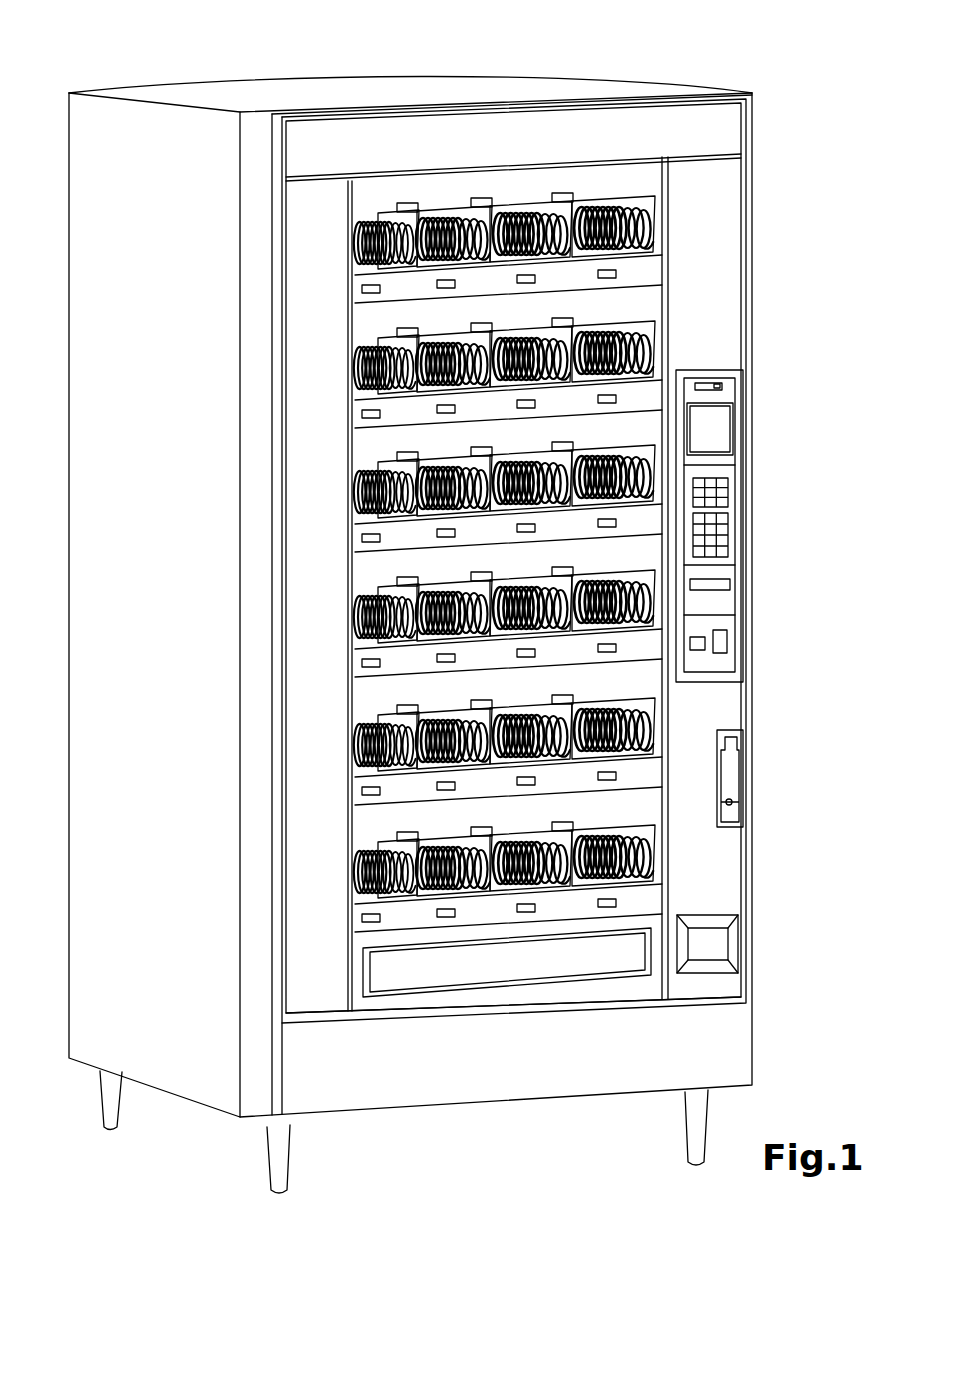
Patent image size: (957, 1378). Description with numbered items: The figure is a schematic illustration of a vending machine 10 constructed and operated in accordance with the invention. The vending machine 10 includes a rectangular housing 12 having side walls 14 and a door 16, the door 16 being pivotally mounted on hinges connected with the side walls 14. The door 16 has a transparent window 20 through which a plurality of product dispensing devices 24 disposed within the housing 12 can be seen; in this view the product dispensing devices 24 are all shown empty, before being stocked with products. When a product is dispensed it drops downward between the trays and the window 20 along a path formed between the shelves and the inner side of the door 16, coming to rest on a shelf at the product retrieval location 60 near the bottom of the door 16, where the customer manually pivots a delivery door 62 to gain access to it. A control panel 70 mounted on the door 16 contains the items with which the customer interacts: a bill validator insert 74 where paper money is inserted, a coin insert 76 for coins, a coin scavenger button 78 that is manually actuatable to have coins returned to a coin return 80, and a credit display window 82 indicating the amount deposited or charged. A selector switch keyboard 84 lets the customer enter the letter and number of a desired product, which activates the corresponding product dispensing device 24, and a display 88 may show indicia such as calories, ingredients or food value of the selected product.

The vending machine 10 is at (748, 72).
The housing 12 is at (210, 102).
The side walls 14 is at (118, 449).
The door 16 is at (265, 627).
The transparent window 20 is at (462, 187).
The product dispensing devices 24 is at (377, 227).
The product retrieval location 60 is at (485, 980).
The delivery door 62 is at (385, 970).
The control panel 70 is at (740, 475).
The bill validator insert 74 is at (715, 582).
The coin insert 76 is at (727, 642).
The coin scavenger button 78 is at (703, 647).
The coin return 80 is at (713, 945).
The credit display window 82 is at (713, 384).
The selector switch keyboard 84 is at (715, 533).
The display 88 is at (723, 423).